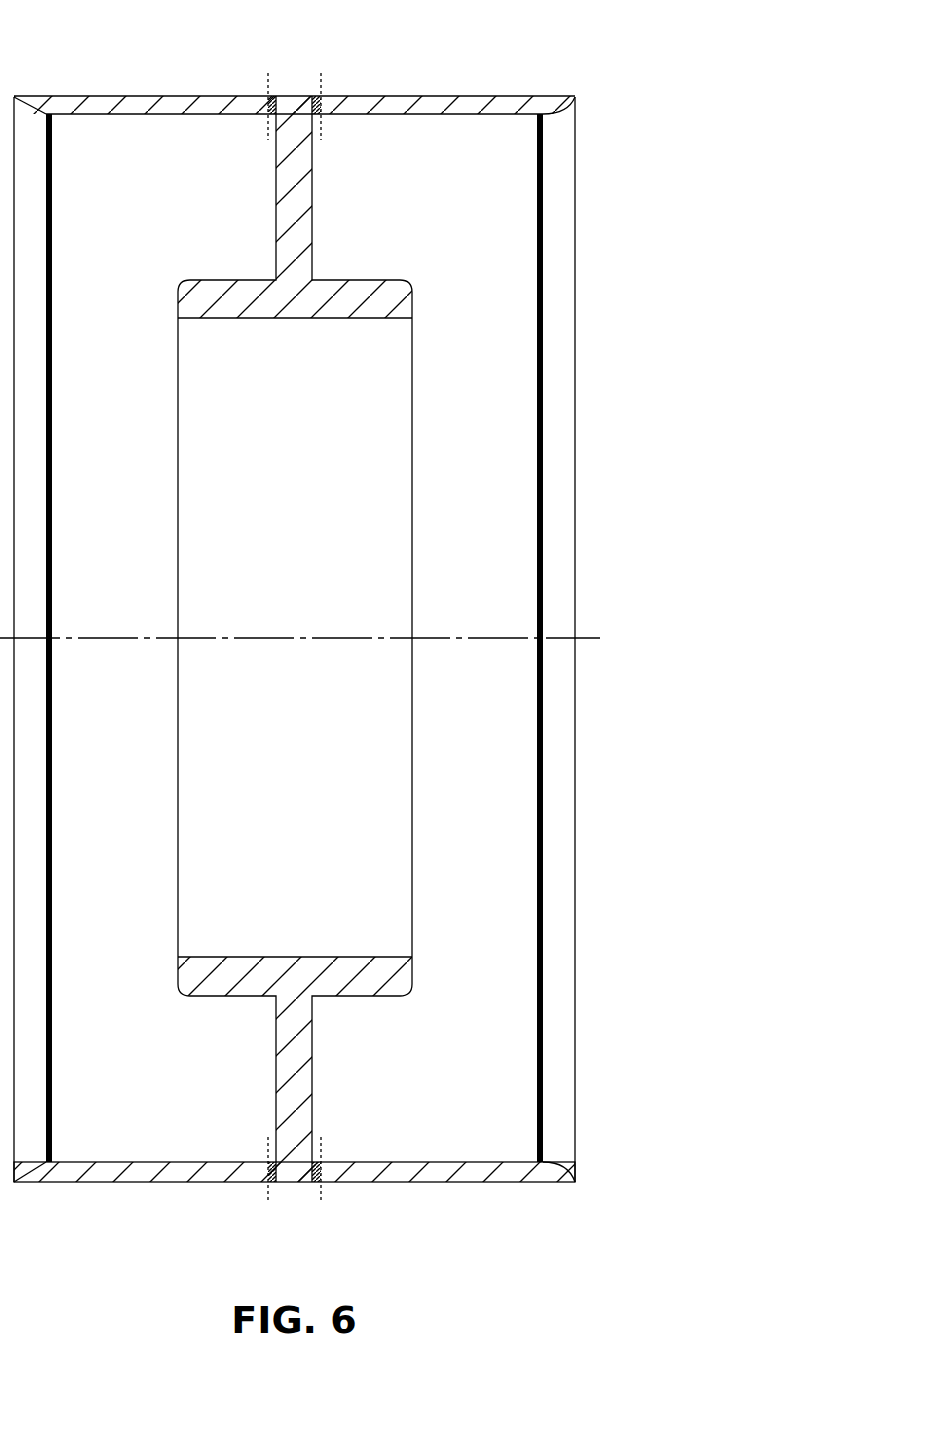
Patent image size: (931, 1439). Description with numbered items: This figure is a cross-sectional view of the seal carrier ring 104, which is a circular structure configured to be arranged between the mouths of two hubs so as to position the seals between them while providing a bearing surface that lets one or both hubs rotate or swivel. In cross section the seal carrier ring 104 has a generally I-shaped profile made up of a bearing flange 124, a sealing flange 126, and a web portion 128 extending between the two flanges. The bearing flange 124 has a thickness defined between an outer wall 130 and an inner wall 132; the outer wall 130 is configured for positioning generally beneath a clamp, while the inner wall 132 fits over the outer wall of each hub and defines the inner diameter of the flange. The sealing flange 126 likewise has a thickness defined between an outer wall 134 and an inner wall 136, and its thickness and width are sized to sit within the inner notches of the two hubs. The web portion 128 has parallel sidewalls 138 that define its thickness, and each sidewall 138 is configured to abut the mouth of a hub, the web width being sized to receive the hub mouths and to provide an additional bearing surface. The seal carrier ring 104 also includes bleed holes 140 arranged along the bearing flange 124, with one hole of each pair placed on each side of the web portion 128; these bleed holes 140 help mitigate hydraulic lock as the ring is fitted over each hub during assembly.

The seal carrier ring 104 is at (442, 1172).
The bearing flange 124 is at (110, 105).
The sealing flange 126 is at (274, 639).
The web portion 128 is at (300, 244).
The outer wall 130 is at (445, 97).
The inner wall 132 is at (133, 115).
The outer wall 134 is at (225, 280).
The inner wall 136 is at (298, 318).
The sidewalls 138 is at (280, 152).
The bleed holes 140 is at (317, 100).